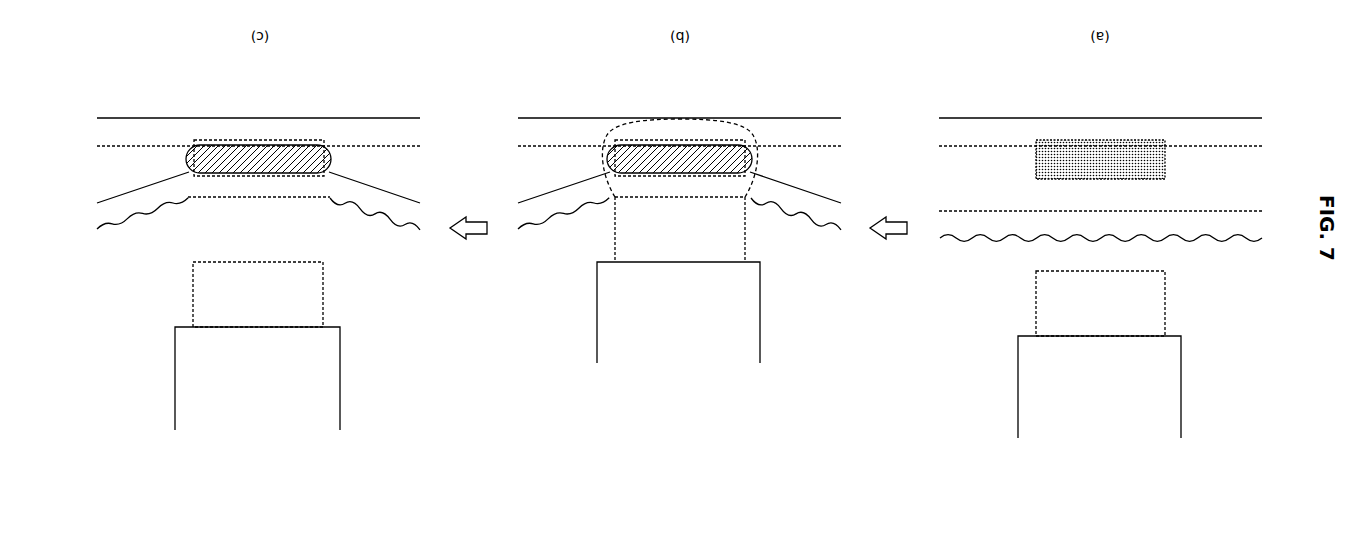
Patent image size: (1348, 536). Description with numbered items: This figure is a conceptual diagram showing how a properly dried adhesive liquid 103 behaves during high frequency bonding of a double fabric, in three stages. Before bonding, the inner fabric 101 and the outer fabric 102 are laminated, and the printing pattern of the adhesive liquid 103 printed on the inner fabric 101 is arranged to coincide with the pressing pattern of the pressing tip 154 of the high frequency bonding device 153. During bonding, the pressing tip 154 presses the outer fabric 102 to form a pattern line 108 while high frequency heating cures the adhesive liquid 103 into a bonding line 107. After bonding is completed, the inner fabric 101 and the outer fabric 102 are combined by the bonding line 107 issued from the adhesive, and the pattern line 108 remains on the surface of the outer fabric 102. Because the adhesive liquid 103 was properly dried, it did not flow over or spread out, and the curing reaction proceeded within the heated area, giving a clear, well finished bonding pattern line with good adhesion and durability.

The inner fabric 101 is at (1212, 122).
The outer fabric 102 is at (1217, 232).
The adhesive liquid 103 is at (1036, 148).
The bonding line 107 is at (607, 157).
The pattern line 108 is at (690, 198).
The high frequency bonding device 153 is at (1018, 362).
The pressing tip 154 is at (1036, 307).